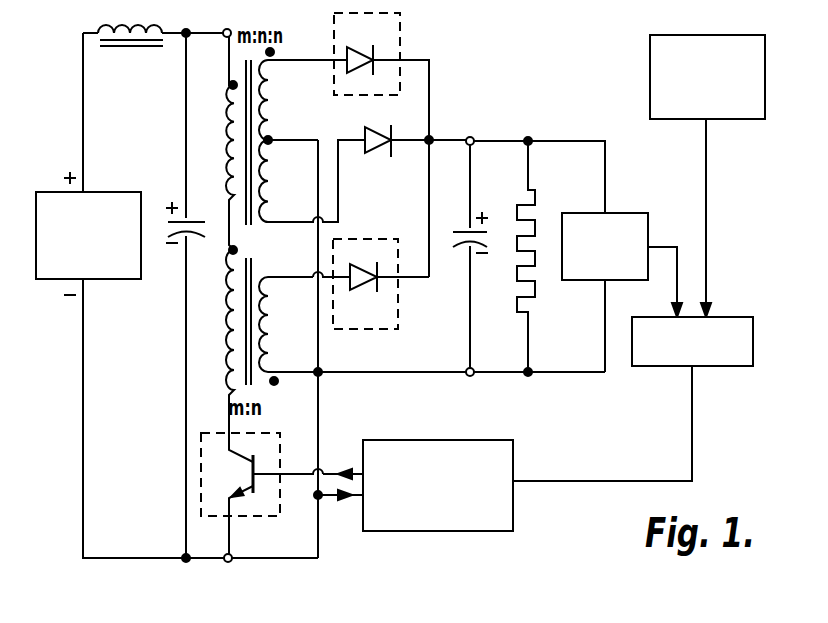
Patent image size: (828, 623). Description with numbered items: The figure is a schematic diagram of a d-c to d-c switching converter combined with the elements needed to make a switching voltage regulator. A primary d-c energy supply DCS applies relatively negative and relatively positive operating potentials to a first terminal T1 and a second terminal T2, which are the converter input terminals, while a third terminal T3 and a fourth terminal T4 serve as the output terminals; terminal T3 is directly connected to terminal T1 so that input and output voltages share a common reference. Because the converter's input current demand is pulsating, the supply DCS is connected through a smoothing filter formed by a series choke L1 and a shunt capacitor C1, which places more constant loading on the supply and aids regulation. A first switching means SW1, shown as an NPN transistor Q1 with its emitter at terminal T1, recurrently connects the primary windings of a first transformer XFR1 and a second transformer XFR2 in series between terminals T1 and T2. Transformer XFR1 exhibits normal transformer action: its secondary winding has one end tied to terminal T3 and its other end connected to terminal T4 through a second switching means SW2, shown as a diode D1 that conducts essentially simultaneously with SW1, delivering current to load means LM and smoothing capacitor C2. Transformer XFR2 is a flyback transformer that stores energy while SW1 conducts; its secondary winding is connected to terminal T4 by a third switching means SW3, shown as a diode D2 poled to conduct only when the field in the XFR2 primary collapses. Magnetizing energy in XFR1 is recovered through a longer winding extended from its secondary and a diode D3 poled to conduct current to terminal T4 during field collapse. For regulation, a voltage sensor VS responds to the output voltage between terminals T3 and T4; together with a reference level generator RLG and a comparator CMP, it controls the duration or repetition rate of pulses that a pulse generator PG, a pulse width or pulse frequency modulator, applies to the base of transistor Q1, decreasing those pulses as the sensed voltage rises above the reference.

The series choke L1 is at (97, 23).
The second terminal T2 is at (226, 28).
The primary d-c energy supply DCS is at (104, 192).
The shunt capacitor C1 is at (203, 218).
The first transformer XFR1 is at (312, 106).
The second transformer XFR2 is at (310, 334).
The diode D1 is at (382, 40).
The second switching means SW2 is at (400, 47).
The diode D3 is at (365, 126).
The diode D2 is at (380, 323).
The third switching means SW3 is at (394, 330).
The fourth terminal T4 is at (469, 137).
The third terminal T3 is at (472, 377).
The smoothing capacitor C2 is at (455, 235).
The load means LM is at (517, 236).
The voltage sensor VS is at (636, 212).
The reference level generator RLG is at (650, 74).
The comparator CMP is at (659, 367).
The pulse generator PG is at (513, 516).
The NPN transistor Q1 is at (236, 485).
The first switching means SW1 is at (248, 517).
The first terminal T1 is at (229, 563).